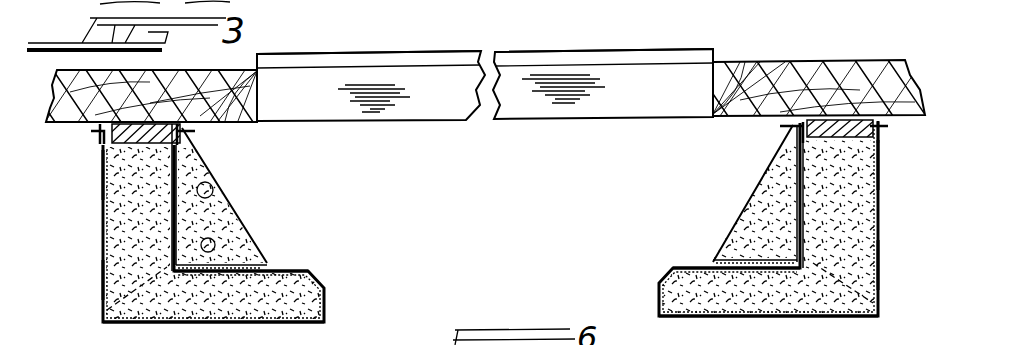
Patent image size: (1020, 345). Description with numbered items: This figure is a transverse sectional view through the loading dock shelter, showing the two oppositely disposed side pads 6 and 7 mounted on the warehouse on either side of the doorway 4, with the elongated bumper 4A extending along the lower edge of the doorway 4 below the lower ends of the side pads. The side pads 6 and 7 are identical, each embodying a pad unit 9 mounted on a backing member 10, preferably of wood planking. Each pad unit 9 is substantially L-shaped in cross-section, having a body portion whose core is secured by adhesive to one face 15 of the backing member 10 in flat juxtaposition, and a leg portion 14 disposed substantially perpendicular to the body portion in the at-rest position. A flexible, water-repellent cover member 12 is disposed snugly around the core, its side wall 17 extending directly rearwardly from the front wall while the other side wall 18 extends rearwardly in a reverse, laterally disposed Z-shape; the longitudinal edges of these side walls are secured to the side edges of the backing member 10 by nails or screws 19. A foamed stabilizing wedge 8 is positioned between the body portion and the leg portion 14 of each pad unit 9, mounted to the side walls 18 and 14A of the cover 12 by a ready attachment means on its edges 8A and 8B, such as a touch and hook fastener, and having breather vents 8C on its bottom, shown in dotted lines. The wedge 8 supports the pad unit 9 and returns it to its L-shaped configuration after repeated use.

The doorway 4 is at (257, 105).
The bumper 4A is at (468, 40).
The side pad 6 is at (103, 252).
The side pad 7 is at (870, 212).
The stabilizing wedge 8 is at (228, 208).
The edge of stabilizing wedge 8A is at (178, 183).
The edge of stabilizing wedge 8B is at (268, 264).
The breather vent 8C is at (210, 188).
The pad unit 9 is at (114, 197).
The backing member 10 is at (180, 150).
The cover member 12 is at (327, 305).
The leg portion 14 is at (247, 303).
The side wall 14A is at (305, 272).
The face of backing member 15 is at (103, 175).
The side wall 17 is at (103, 278).
The side wall 18 is at (757, 235).
The nails or screws 19 is at (97, 133).